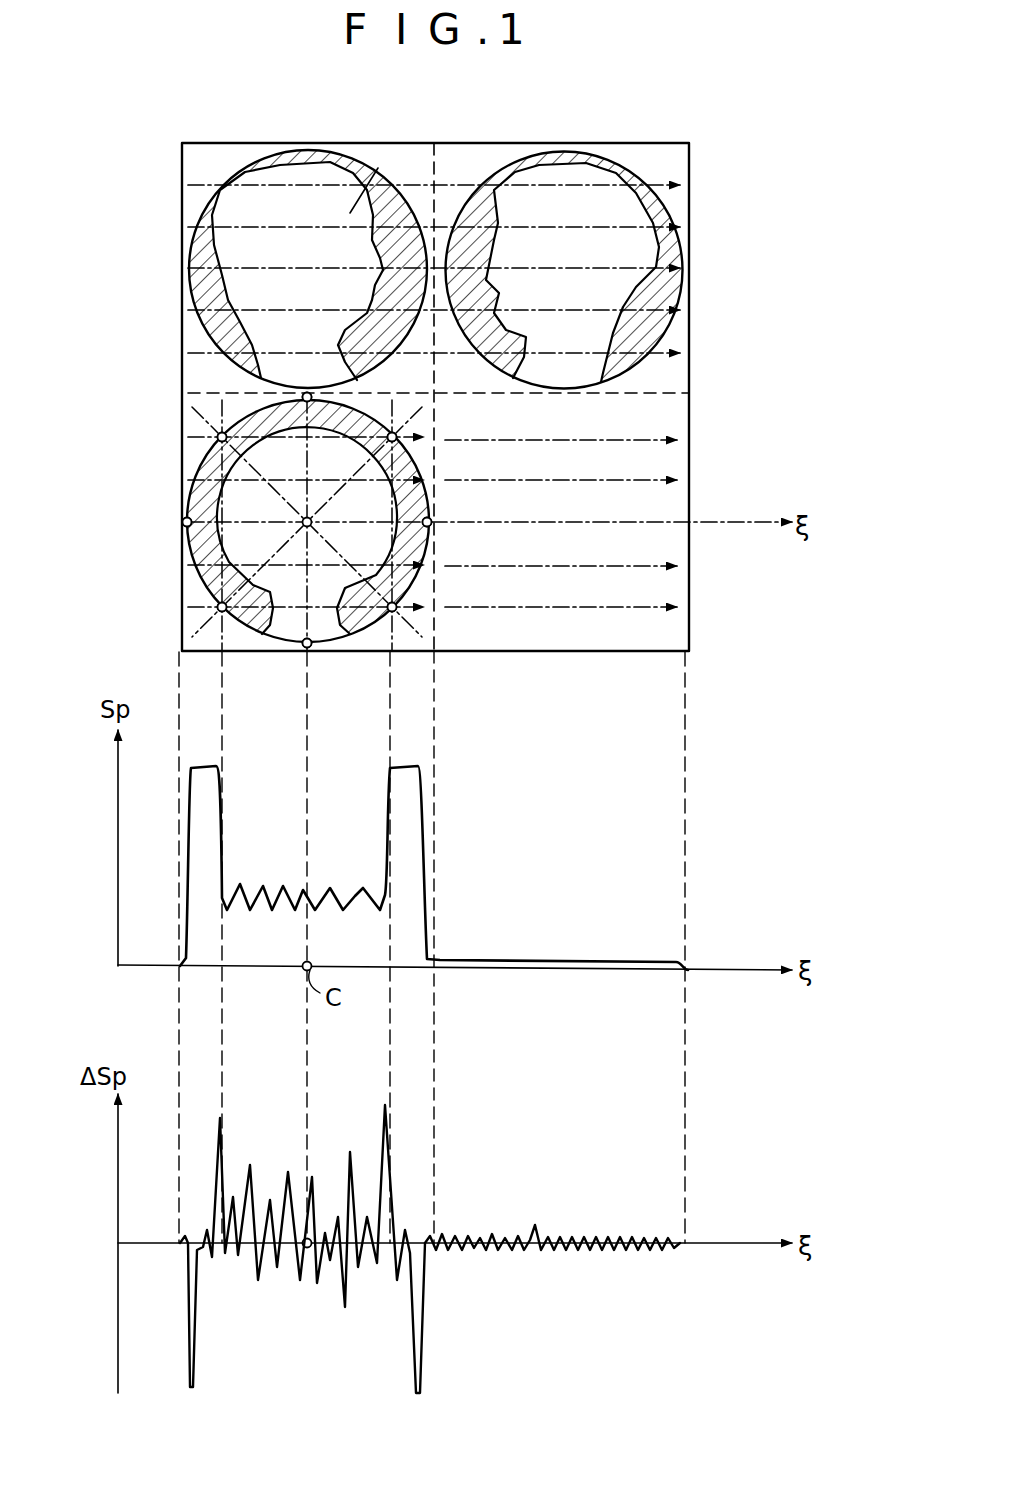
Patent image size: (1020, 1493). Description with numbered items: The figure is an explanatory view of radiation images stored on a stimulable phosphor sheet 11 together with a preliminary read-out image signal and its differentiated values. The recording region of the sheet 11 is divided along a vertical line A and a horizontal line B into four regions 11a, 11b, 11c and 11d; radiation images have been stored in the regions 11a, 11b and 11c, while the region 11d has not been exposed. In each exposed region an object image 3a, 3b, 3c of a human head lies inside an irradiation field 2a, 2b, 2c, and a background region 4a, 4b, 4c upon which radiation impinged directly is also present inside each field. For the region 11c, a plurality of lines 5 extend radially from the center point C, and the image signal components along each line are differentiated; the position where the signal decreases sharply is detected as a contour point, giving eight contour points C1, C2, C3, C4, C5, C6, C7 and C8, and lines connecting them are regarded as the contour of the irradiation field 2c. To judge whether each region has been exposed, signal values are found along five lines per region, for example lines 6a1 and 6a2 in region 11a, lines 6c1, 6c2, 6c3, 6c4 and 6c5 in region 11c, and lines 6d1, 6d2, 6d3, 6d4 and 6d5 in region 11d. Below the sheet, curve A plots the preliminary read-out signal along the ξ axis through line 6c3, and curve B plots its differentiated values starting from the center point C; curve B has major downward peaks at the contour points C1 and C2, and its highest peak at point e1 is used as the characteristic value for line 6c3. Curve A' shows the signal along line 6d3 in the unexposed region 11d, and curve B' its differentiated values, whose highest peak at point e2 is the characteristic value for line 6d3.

The stimulable phosphor sheet 11 is at (690, 173).
The region 11a is at (205, 165).
The region 11b is at (666, 165).
The region 11c is at (200, 420).
The region 11d is at (672, 456).
The irradiation field 2a is at (338, 152).
The object image 3a is at (302, 160).
The background region 4a is at (250, 160).
The line 6a1 is at (378, 168).
The line 6a2 is at (418, 158).
The irradiation field 2b is at (608, 153).
The object image 3b is at (552, 160).
The background region 4b is at (623, 173).
The irradiation field 2c is at (237, 407).
The object image 3c is at (227, 433).
The background region 4c is at (205, 553).
The line 5 is at (372, 393).
The line 6c1 is at (235, 470).
The line 6c2 is at (247, 508).
The line 6c3 is at (195, 578).
The line 6c4 is at (287, 652).
The line 6c5 is at (290, 690).
The line 6d1 is at (550, 440).
The line 6d2 is at (573, 480).
The line 6d3 is at (576, 522).
The line 6d4 is at (576, 566).
The line 6d5 is at (580, 607).
The center point C is at (330, 522).
The contour point C1 is at (185, 526).
The contour point C2 is at (433, 528).
The contour point C3 is at (220, 610).
The contour point C4 is at (310, 647).
The contour point C5 is at (436, 592).
The contour point C6 is at (430, 440).
The contour point C7 is at (307, 392).
The contour point C8 is at (217, 433).
The line A / curve A is at (471, 680).
The curve A' is at (434, 868).
The line B / curve B is at (465, 748).
The curve B' is at (430, 1249).
The point e1 is at (392, 1108).
The point e2 is at (535, 1226).